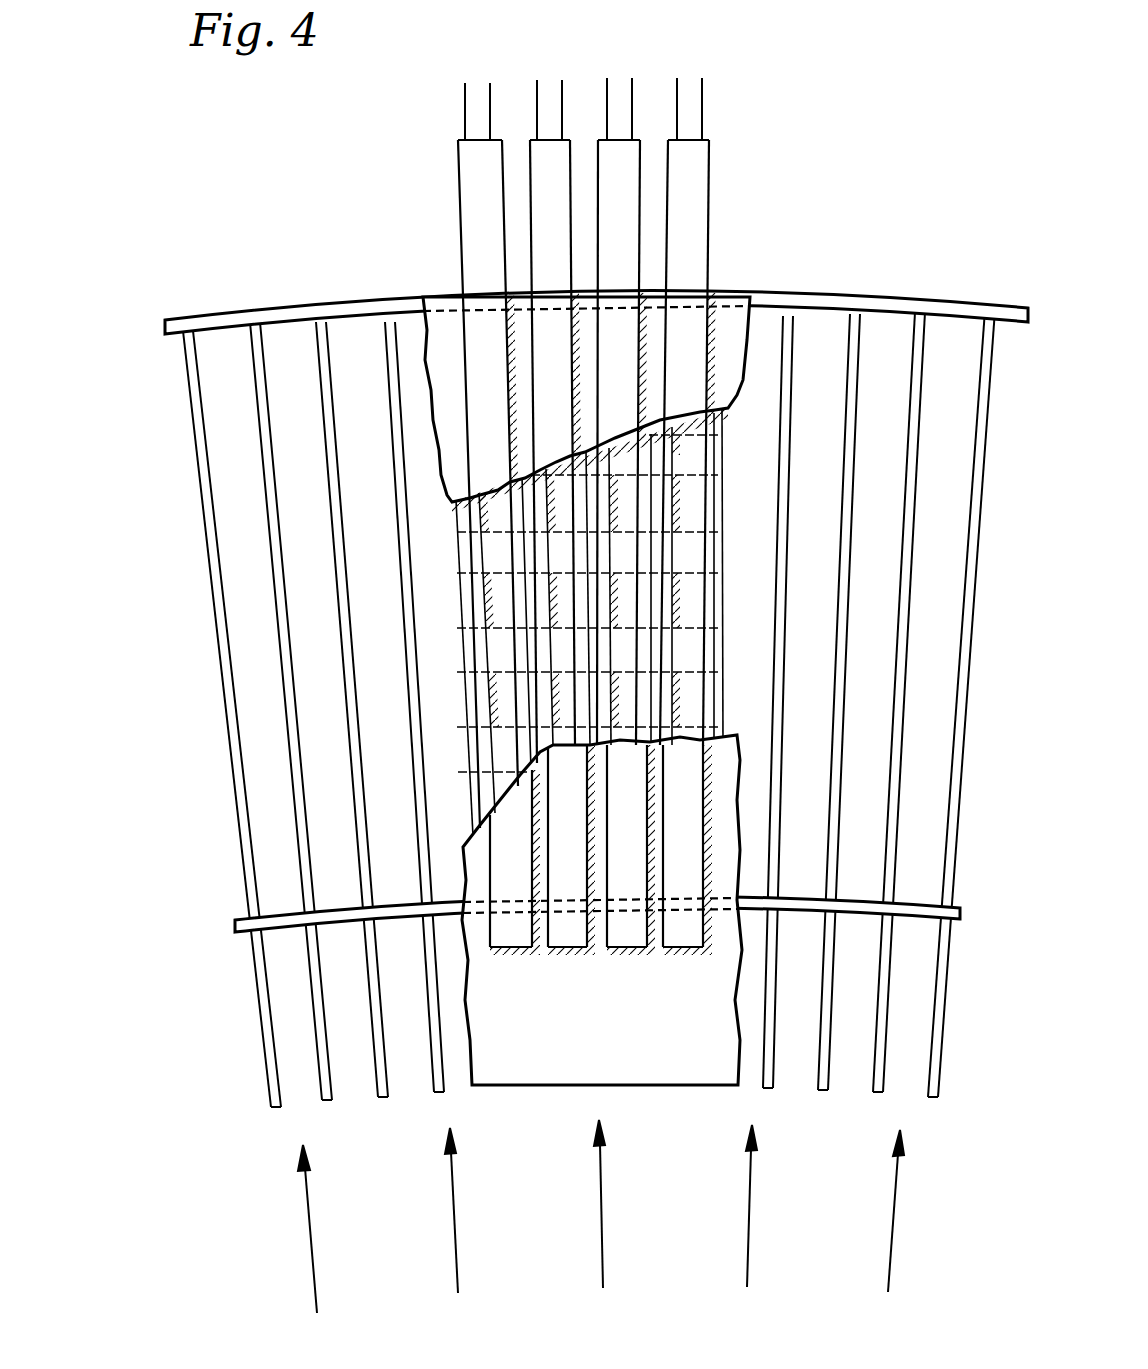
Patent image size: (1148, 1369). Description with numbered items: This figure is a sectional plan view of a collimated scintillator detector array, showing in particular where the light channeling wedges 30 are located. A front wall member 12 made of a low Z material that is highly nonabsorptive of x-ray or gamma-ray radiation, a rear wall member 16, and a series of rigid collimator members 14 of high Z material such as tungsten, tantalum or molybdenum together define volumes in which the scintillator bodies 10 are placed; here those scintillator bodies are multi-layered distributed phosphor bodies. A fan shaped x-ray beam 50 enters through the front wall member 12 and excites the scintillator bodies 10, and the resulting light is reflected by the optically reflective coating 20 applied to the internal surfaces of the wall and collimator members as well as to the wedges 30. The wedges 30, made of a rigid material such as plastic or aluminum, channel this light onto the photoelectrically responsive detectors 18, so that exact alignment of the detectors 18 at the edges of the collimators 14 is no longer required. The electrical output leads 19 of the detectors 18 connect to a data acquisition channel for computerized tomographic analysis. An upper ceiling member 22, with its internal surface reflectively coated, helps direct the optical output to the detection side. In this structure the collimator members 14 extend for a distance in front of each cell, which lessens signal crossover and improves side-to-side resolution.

The scintillator bodies 10 is at (719, 431).
The front wall member 12 is at (338, 932).
The collimator members 14 is at (330, 445).
The rear wall member 16 is at (368, 300).
The photoelectrically responsive detectors 18 is at (469, 199).
The electrical output leads 19 is at (554, 81).
The reflective coating 20 is at (353, 321).
The upper ceiling member 22 is at (733, 300).
The light channeling wedges 30 is at (669, 554).
The fan shaped x-ray beam 50 is at (308, 1208).